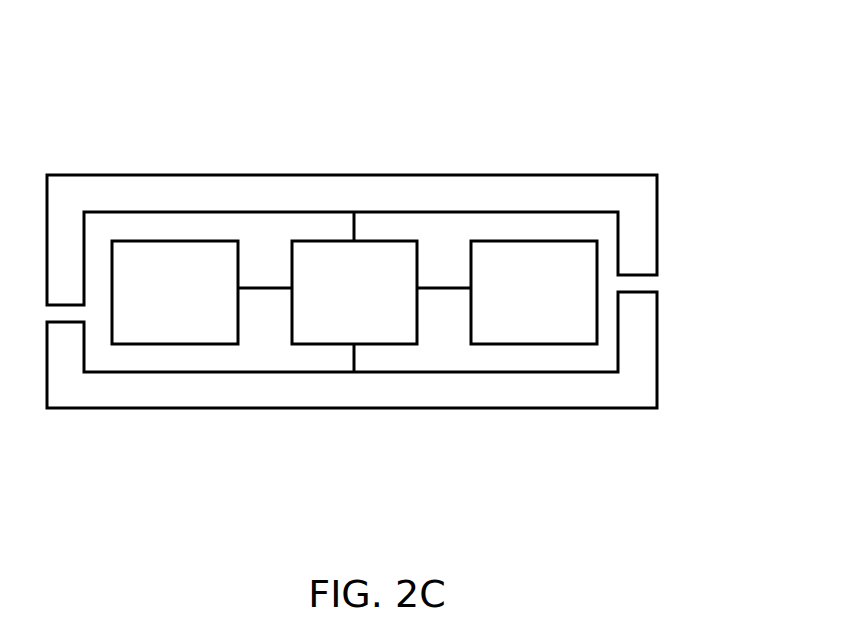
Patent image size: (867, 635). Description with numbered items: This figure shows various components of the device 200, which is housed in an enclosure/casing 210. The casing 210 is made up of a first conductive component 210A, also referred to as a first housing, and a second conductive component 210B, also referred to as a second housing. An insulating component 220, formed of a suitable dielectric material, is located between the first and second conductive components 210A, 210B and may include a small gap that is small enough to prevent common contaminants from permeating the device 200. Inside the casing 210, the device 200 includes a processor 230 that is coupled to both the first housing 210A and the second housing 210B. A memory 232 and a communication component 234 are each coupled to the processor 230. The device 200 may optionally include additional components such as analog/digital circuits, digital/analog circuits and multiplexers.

The device 200 is at (512, 52).
The enclosure/casing 210 is at (688, 187).
The first conductive component 210A is at (595, 175).
The second conductive component 210B is at (540, 387).
The insulating component 220 is at (666, 275).
The processor 230 is at (333, 306).
The memory 232 is at (513, 306).
The communication component 234 is at (154, 306).